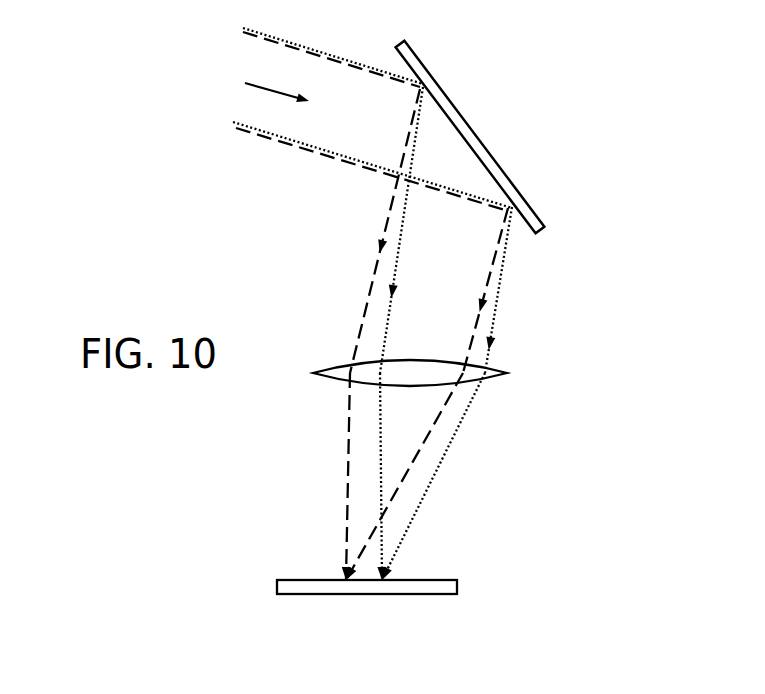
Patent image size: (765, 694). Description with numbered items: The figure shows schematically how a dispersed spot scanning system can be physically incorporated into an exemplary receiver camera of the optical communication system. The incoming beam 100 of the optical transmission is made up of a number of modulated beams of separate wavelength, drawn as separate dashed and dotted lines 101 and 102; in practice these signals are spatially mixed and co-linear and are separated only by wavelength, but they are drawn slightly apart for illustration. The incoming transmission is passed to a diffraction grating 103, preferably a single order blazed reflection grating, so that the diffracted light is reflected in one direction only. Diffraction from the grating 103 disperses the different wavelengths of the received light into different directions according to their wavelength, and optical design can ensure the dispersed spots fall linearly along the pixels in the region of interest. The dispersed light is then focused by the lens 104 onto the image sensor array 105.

The incoming beam 100 is at (299, 100).
The dashed line beam 101 is at (312, 153).
The dotted line beam 102 is at (248, 130).
The diffraction grating 103 is at (459, 105).
The lens 104 is at (319, 373).
The image sensor array 105 is at (294, 580).